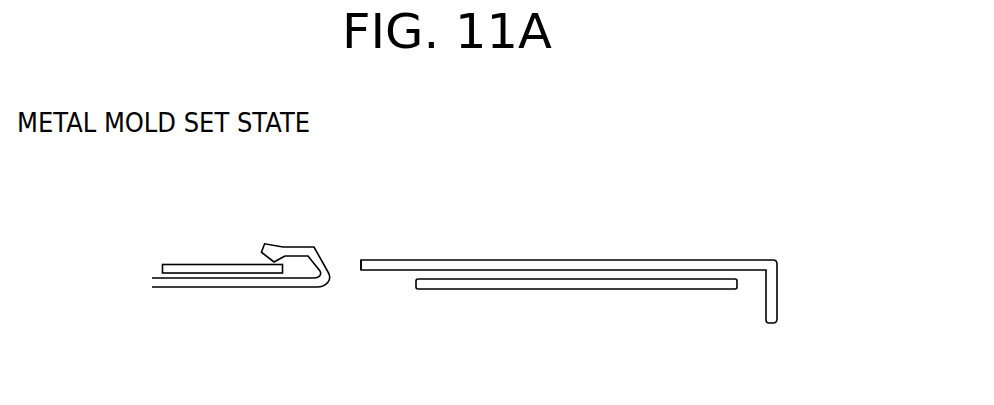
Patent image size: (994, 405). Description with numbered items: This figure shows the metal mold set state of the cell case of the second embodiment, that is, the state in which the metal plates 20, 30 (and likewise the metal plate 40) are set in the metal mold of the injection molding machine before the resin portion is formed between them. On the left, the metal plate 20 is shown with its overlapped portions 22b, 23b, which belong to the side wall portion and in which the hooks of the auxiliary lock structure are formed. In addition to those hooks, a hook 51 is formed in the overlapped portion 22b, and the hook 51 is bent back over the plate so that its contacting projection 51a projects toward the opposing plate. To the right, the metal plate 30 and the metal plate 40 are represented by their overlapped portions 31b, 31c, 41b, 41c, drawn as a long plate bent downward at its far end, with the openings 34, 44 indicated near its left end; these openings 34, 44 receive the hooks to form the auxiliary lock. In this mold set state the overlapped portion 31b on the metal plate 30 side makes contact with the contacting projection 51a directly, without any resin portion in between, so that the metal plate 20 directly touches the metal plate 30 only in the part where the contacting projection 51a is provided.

The metal plate 20 is at (576, 325).
The overlapped portion 22b is at (576, 321).
The overlapped portion 23b is at (582, 292).
The metal plate 30 is at (578, 254).
The metal plate 40 is at (578, 254).
The overlapped portion 31b is at (547, 262).
The overlapped portion 31c is at (547, 262).
The overlapped portion 41b is at (547, 262).
The overlapped portion 41c is at (547, 262).
The opening 34 is at (357, 235).
The opening 44 is at (346, 266).
The hook 51 is at (241, 224).
The contacting projection 51a is at (287, 231).